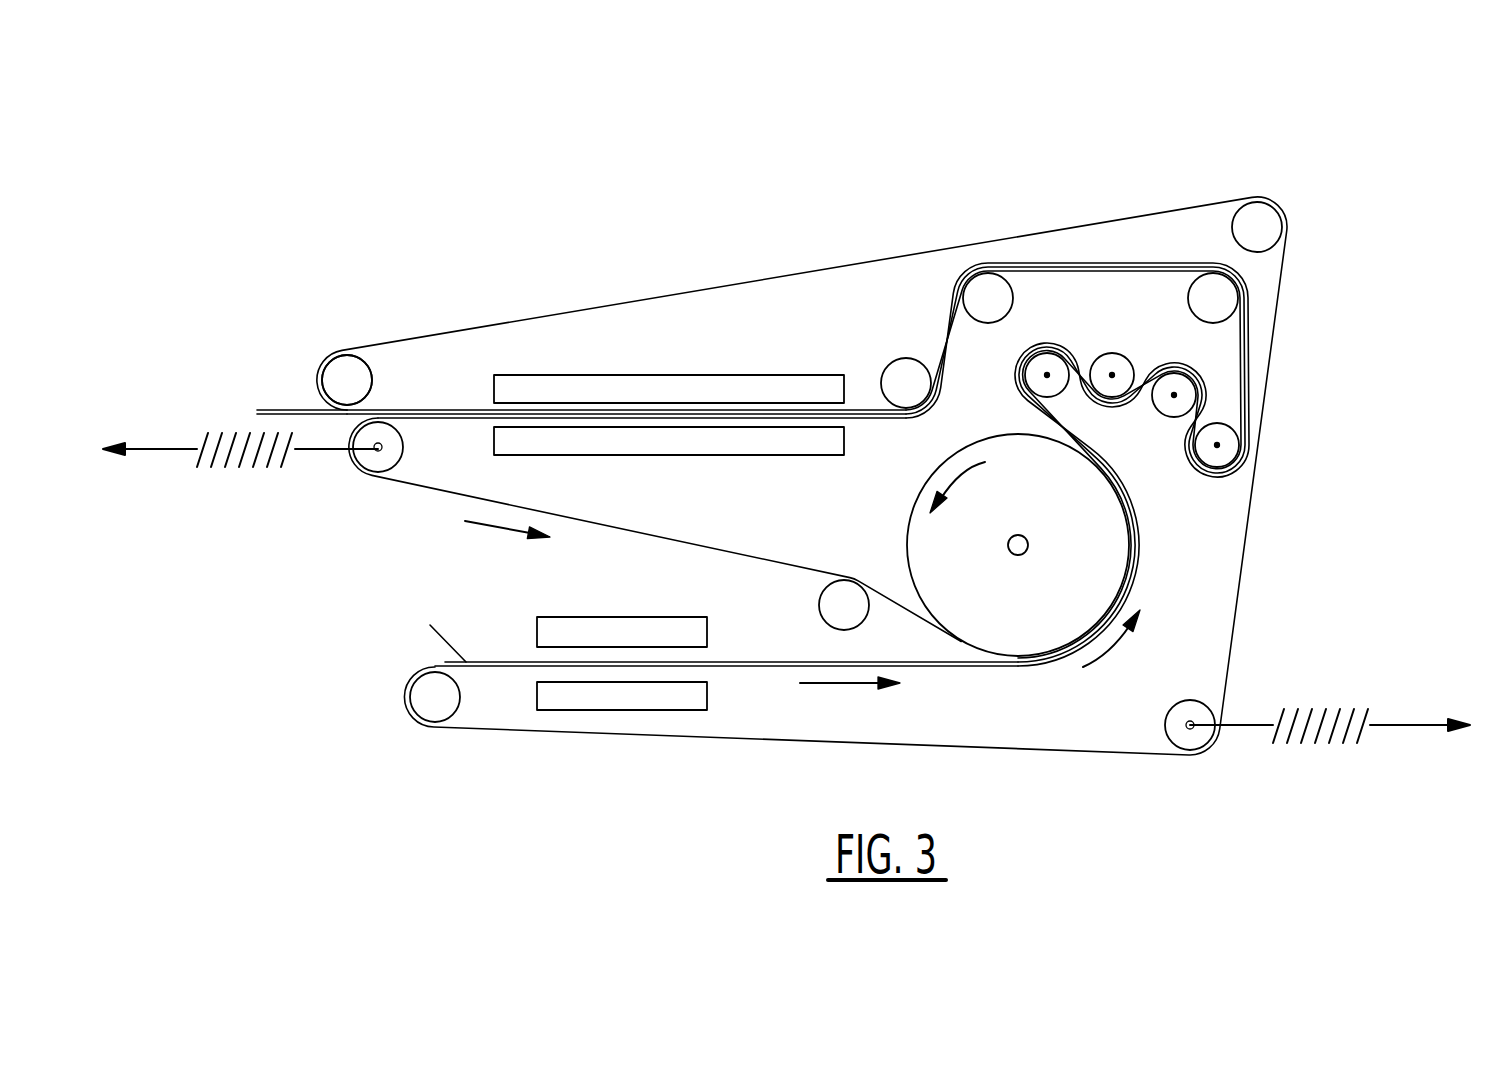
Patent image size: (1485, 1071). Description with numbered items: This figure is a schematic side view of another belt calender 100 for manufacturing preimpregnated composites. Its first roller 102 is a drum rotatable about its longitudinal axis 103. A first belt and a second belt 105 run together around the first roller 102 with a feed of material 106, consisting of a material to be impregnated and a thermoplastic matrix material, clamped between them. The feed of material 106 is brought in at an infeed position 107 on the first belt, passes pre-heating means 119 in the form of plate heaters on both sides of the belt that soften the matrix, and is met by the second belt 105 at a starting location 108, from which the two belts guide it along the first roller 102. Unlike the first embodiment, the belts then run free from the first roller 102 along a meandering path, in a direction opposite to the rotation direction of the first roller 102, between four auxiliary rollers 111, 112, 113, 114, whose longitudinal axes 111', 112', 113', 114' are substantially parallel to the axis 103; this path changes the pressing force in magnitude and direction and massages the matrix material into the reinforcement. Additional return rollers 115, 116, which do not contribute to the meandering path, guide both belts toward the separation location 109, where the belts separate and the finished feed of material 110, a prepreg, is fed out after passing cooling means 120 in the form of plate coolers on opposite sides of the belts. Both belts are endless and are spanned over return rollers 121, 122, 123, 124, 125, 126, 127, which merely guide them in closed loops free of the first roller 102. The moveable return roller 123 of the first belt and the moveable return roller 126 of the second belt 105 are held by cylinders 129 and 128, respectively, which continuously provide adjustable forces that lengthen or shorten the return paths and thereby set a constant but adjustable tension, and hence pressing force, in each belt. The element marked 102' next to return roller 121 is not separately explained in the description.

The belt calender 100 is at (461, 158).
The first roller 102 is at (960, 545).
The counter roller 102' is at (391, 372).
The longitudinal axis of the first roller 103 is at (1018, 555).
The second belt 105 is at (415, 488).
The feed of material 106 is at (495, 660).
The infeed position 107 is at (400, 640).
The starting location 108 is at (973, 692).
The separation location 109 is at (441, 386).
The finished feed of material 110 is at (302, 413).
The auxiliary roller 111 is at (1015, 389).
The longitudinal axis of auxiliary roller 111 111' is at (1050, 338).
The auxiliary roller 112 is at (1106, 399).
The longitudinal axis of auxiliary roller 112 112' is at (1115, 334).
The auxiliary roller 113 is at (1173, 362).
The longitudinal axis of auxiliary roller 113 113' is at (1155, 431).
The auxiliary roller 114 is at (1204, 474).
The longitudinal axis of auxiliary roller 114 114' is at (1270, 476).
The return roller 115 is at (1210, 288).
The return roller 116 is at (987, 292).
The pre-heating means 119 is at (595, 627).
The cooling means 120 is at (778, 385).
The return roller 121 is at (338, 370).
The return roller 122 is at (1266, 216).
The moveable return roller 123 is at (1170, 722).
The return roller 124 is at (445, 702).
The return roller 125 is at (908, 393).
The moveable return roller 126 is at (397, 449).
The return roller 127 is at (833, 598).
The cylinder 128 is at (233, 463).
The cylinder 129 is at (1332, 712).